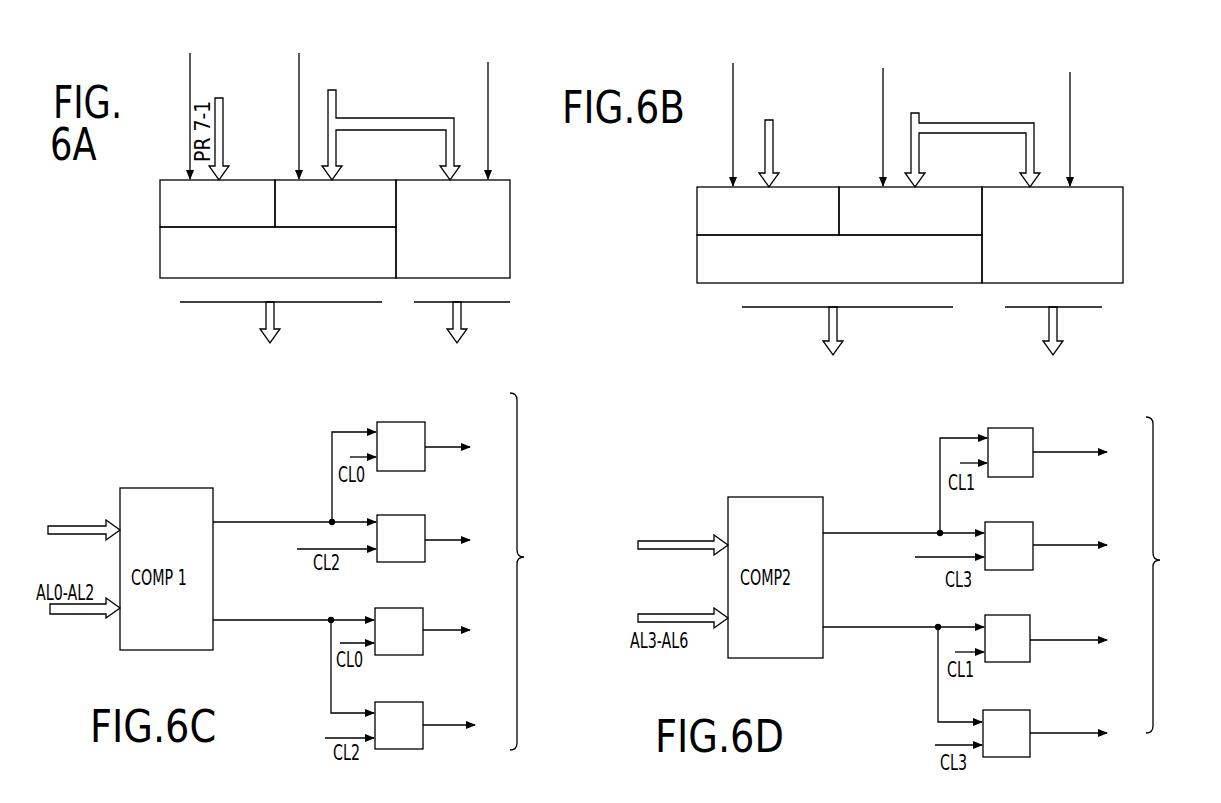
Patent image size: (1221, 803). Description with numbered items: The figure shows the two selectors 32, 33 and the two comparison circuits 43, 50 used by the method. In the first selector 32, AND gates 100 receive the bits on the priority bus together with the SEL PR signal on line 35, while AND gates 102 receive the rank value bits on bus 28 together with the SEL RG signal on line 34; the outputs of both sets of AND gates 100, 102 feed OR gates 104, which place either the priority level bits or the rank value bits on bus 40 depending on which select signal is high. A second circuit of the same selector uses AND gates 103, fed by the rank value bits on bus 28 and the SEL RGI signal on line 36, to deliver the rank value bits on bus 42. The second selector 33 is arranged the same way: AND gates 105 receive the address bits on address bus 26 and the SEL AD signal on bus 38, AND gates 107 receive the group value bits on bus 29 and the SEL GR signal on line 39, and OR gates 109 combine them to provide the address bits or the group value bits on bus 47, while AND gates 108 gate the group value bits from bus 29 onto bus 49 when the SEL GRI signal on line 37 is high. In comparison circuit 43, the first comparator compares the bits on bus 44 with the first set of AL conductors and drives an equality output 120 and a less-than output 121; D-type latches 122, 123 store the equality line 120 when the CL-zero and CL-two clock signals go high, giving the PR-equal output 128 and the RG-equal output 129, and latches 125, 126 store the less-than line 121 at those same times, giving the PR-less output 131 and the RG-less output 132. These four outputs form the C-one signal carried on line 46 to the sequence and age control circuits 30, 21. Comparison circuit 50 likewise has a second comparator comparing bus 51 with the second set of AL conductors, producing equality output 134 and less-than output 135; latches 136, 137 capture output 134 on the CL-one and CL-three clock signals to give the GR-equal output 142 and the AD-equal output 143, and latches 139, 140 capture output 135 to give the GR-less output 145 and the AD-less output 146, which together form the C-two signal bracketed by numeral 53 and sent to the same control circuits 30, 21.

In FIG. 6A, the selector 32 is at (138, 227).
In FIG. 6B, the selector 33 is at (672, 233).
In FIG. 6A, the line carrying SEL PR signal 35 is at (177, 116).
In FIG. 6A, the line carrying SEL RG signal 34 is at (286, 116).
In FIG. 6A, the line carrying SEL RGI signal 36 is at (475, 120).
In FIG. 6A, the rank value bus 28 is at (337, 95).
In FIG. 6A, the AND gates 100 is at (217, 203).
In FIG. 6A, the AND gates 102 is at (335, 203).
In FIG. 6A, the AND gates 103 is at (453, 229).
In FIG. 6A, the OR gates 104 is at (278, 252).
In FIG. 6A, the output bus 40 is at (274, 312).
In FIG. 6A, the output bus 42 is at (461, 312).
In FIG. 6B, the bus carrying SEL AD signal 38 is at (720, 124).
In FIG. 6B, the address bus 26 is at (759, 147).
In FIG. 6B, the line carrying SEL GR signal 39 is at (870, 127).
In FIG. 6B, the group value bus 29 is at (963, 147).
In FIG. 6B, the line carrying SEL GRI signal 37 is at (1057, 127).
In FIG. 6B, the AND gates 105 is at (768, 211).
In FIG. 6B, the AND gates 107 is at (910, 211).
In FIG. 6B, the AND gates 108 is at (1052, 235).
In FIG. 6B, the OR gates 109 is at (839, 259).
In FIG. 6B, the output bus 47 is at (837, 318).
In FIG. 6B, the output bus 49 is at (1057, 318).
In FIG. 6C, the comparison circuit 43 is at (260, 452).
In FIG. 6C, the input bus 44 is at (78, 524).
In FIG. 6C, the equality output line 120 is at (294, 478).
In FIG. 6C, the less-than output line 121 is at (293, 652).
In FIG. 6C, the D-type latch 122 is at (401, 431).
In FIG. 6C, the D-type latch 123 is at (401, 523).
In FIG. 6C, the D-type latch 125 is at (399, 617).
In FIG. 6C, the D-type latch 126 is at (399, 711).
In FIG. 6C, the PR = output line 128 is at (461, 432).
In FIG. 6C, the RG = output line 129 is at (462, 525).
In FIG. 6C, the PR output line 131 is at (459, 616).
In FIG. 6C, the RG output line 132 is at (458, 711).
In FIG. 6C, the line carrying C1 signal 46 is at (536, 571).
In FIG. 6C, the sequence and age control circuit 30 is at (589, 550).
In FIG. 6C, the sequence and age control circuit 21 is at (546, 603).
In FIG. 6D, the sequence and age control circuit 21 is at (1194, 610).
In FIG. 6D, the comparison circuit 50 is at (785, 420).
In FIG. 6D, the input bus 51 is at (679, 544).
In FIG. 6D, the equality output line 134 is at (905, 487).
In FIG. 6D, the less-than output line 135 is at (903, 661).
In FIG. 6D, the D-type latch 136 is at (1010, 437).
In FIG. 6D, the D-type latch 137 is at (1009, 530).
In FIG. 6D, the D-type latch 139 is at (1007, 624).
In FIG. 6D, the D-type latch 140 is at (1006, 718).
In FIG. 6D, the GR = output line 142 is at (1072, 437).
In FIG. 6D, the AD = output line 143 is at (1074, 527).
In FIG. 6D, the GR output line 145 is at (1069, 626).
In FIG. 6D, the AD output line 146 is at (1069, 719).
In FIG. 6D, the comparator outputs to C2 53 is at (1176, 575).